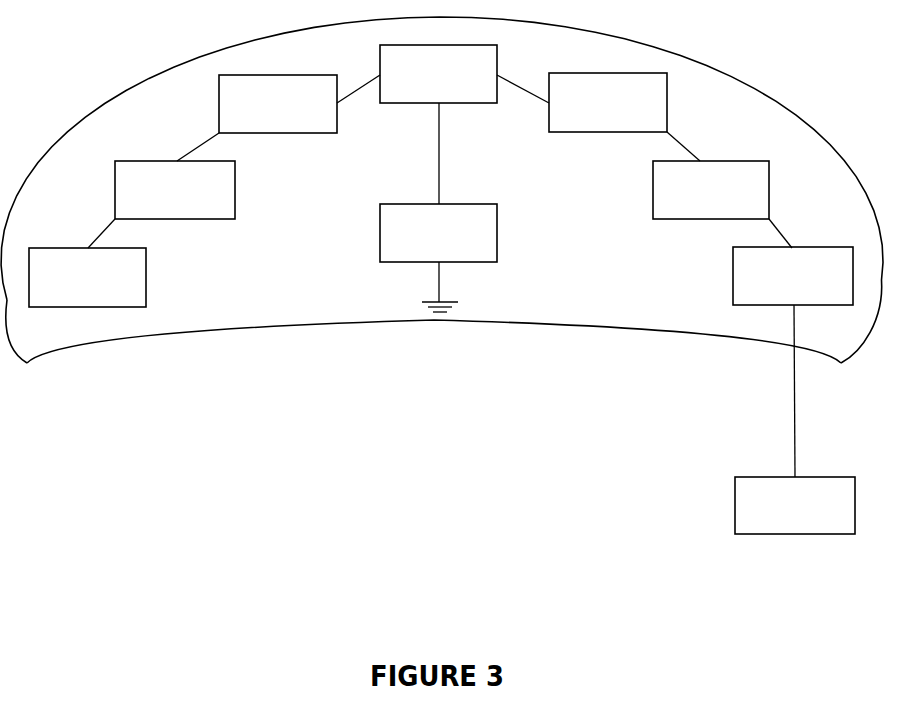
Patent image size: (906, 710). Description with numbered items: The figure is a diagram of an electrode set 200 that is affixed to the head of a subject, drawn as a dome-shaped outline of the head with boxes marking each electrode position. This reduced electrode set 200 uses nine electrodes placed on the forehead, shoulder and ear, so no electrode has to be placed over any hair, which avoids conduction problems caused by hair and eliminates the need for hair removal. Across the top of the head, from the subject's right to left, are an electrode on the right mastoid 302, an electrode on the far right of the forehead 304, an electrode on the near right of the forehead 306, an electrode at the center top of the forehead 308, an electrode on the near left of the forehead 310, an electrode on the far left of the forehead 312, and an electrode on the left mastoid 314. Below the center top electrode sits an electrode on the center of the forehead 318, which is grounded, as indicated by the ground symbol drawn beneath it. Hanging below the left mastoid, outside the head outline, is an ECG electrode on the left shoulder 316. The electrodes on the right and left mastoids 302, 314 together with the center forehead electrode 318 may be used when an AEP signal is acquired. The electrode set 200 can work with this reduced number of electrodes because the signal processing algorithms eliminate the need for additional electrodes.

The electrode set 200 is at (123, 396).
The right mastoid electrode 302 is at (87, 263).
The far right forehead electrode 304 is at (175, 176).
The near right forehead electrode 306 is at (299, 104).
The center top forehead electrode 308 is at (464, 124).
The near left forehead electrode 310 is at (624, 117).
The far left forehead electrode 312 is at (722, 204).
The left mastoid electrode 314 is at (793, 362).
The ECG electrode on left shoulder 316 is at (795, 505).
The center forehead electrode 318 is at (438, 258).